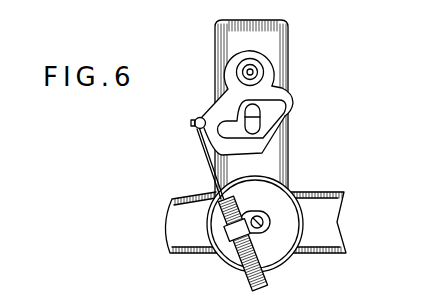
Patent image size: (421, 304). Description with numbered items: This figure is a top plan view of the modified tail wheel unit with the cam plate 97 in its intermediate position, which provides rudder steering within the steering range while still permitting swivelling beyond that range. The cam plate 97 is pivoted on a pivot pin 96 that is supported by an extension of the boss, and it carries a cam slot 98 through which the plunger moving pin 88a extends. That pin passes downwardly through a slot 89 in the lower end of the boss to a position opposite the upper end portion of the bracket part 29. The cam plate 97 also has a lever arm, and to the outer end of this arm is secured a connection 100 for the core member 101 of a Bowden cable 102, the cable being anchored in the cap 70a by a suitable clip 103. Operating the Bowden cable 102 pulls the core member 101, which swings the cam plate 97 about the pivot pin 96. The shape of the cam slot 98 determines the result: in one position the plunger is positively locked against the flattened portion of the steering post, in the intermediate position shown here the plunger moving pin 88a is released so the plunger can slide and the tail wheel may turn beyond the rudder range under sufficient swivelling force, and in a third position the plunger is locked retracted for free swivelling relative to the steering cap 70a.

The bracket part 29 is at (251, 100).
The cap 70a is at (281, 203).
The plunger moving pin 88a is at (261, 127).
The slot 89 is at (238, 104).
The pivot pin 96 is at (254, 70).
The cam plate 97 is at (286, 95).
The cam slot 98 is at (284, 108).
The connection 100 is at (194, 124).
The core member 101 is at (208, 147).
The Bowden cable 102 is at (254, 287).
The clip 103 is at (231, 237).